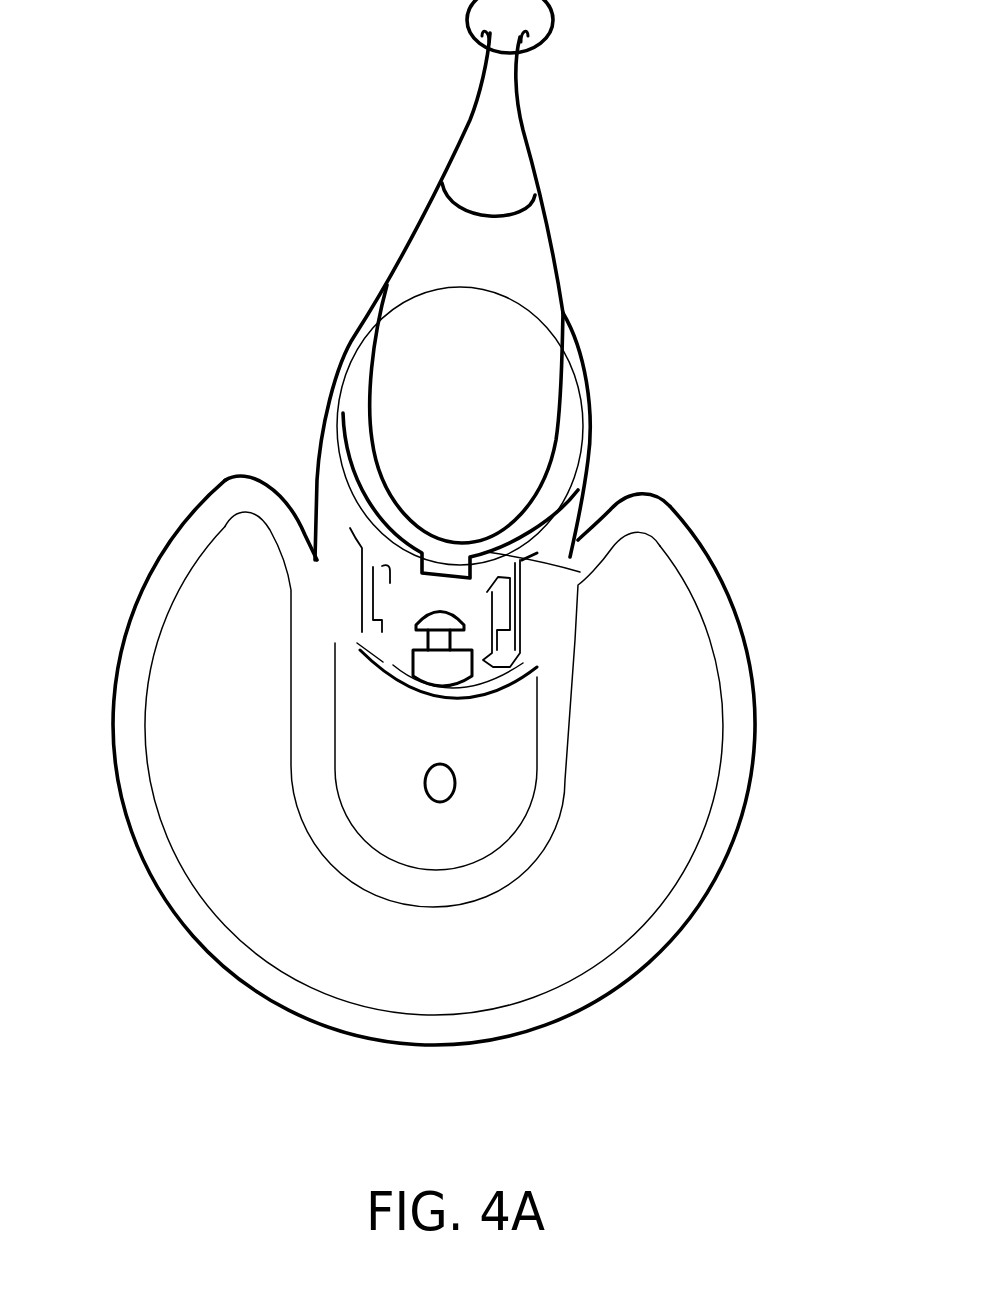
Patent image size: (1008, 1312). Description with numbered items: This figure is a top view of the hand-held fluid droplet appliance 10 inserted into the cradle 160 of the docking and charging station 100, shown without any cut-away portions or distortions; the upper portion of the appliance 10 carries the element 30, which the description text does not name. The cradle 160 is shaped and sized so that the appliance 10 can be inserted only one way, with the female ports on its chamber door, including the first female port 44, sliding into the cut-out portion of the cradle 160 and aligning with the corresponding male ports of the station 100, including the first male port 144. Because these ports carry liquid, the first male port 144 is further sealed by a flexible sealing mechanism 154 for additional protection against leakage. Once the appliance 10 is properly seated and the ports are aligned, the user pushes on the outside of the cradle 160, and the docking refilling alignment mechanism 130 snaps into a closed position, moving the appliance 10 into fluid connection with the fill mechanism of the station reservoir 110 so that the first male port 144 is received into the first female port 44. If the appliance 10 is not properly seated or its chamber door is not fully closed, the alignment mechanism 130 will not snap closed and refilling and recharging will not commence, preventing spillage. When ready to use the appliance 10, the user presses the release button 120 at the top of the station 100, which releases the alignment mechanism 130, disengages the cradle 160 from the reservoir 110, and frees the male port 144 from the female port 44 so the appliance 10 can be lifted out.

The hand-held fluid droplet appliance 10 is at (560, 267).
The grip portion 30 is at (503, 143).
The first female port 44 is at (432, 583).
The docking and charging station 100 is at (762, 730).
The reservoir 110 is at (447, 972).
The release button 120 is at (443, 781).
The docking refilling alignment mechanism 130 is at (517, 603).
The first male port 144 is at (434, 647).
The flexible sealing mechanism 154 is at (422, 632).
The cradle 160 is at (582, 403).